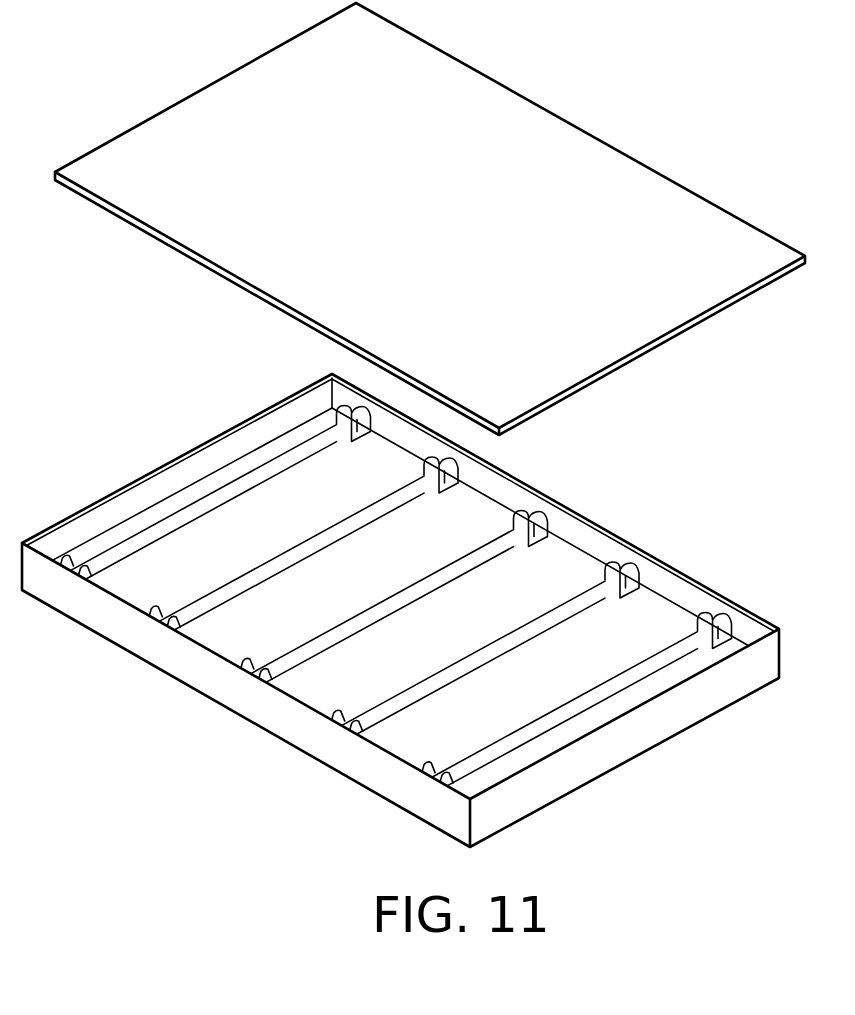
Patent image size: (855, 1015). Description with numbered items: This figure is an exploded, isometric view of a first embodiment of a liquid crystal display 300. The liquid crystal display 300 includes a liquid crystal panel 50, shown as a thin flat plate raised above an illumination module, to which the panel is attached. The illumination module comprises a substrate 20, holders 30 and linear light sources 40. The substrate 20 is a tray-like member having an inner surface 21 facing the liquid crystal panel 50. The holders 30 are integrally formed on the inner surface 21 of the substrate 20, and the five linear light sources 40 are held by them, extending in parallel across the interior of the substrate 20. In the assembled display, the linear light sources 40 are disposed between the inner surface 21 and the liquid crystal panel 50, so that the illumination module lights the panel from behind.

The liquid crystal display 300 is at (139, 61).
The liquid crystal panel 50 is at (607, 168).
The substrate 20 is at (400, 610).
The inner surface 21 is at (471, 520).
The holders 30 is at (653, 566).
The linear light sources 40 is at (570, 597).